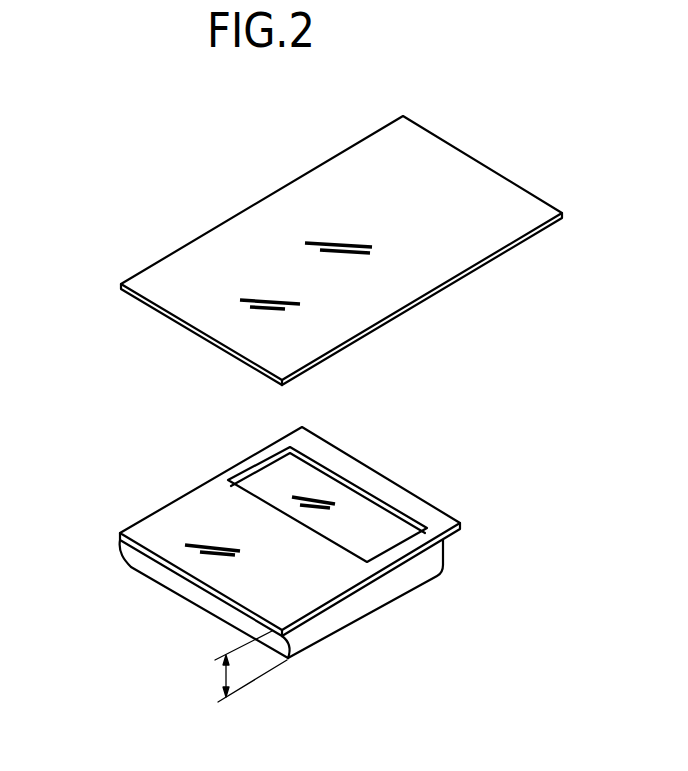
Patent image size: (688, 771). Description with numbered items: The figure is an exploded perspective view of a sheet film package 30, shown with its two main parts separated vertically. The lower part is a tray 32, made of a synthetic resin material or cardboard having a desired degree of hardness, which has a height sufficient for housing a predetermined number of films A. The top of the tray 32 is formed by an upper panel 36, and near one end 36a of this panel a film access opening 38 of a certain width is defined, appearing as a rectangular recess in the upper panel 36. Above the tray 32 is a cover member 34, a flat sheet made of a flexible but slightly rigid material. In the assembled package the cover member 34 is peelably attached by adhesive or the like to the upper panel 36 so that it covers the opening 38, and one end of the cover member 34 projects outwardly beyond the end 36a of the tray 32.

The sheet film package 30 is at (294, 531).
The tray 32 is at (408, 485).
The cover member 34 is at (448, 173).
The upper panel 36 is at (330, 583).
The end of upper panel 36a is at (318, 450).
The film access opening 38 is at (315, 478).
The films A is at (390, 527).